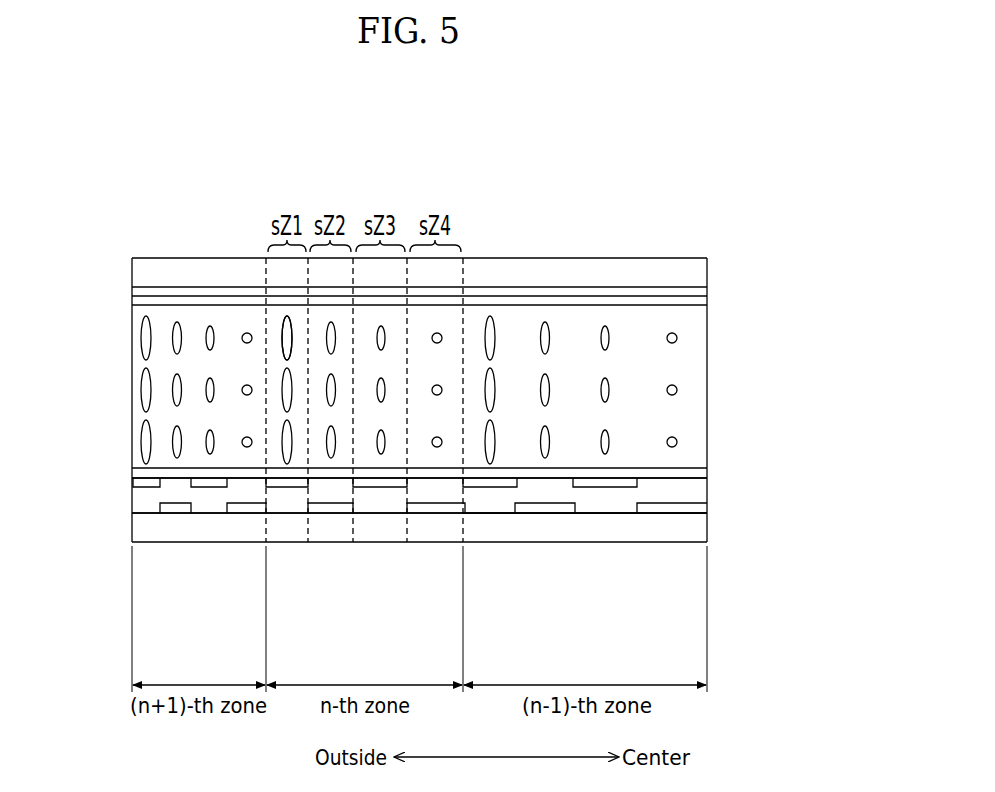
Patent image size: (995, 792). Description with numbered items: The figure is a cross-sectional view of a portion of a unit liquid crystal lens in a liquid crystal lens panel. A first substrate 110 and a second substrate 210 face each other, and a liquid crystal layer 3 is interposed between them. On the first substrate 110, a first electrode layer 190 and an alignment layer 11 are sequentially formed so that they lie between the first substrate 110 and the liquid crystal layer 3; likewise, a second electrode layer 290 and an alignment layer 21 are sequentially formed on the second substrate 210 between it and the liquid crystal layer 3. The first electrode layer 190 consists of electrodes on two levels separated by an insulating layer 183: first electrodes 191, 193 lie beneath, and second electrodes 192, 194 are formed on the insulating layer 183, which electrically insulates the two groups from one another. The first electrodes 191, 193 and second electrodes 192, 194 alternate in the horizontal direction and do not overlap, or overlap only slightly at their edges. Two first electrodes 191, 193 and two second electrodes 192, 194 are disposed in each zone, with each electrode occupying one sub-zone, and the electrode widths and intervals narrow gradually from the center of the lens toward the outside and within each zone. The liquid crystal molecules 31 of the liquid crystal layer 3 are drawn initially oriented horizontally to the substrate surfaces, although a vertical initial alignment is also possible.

The liquid crystal layer 3 is at (717, 307).
The alignment layer 11 is at (140, 473).
The alignment layer 21 is at (140, 300).
The liquid crystal molecules 31 is at (283, 333).
The first substrate 110 is at (192, 530).
The insulating layer 183 is at (590, 500).
The first electrode layer 190 is at (715, 478).
The first electrode 191 is at (437, 506).
The second electrode 192 is at (383, 486).
The first electrode 193 is at (331, 510).
The second electrode 194 is at (287, 486).
The second substrate 210 is at (175, 268).
The second electrode layer 290 is at (140, 292).